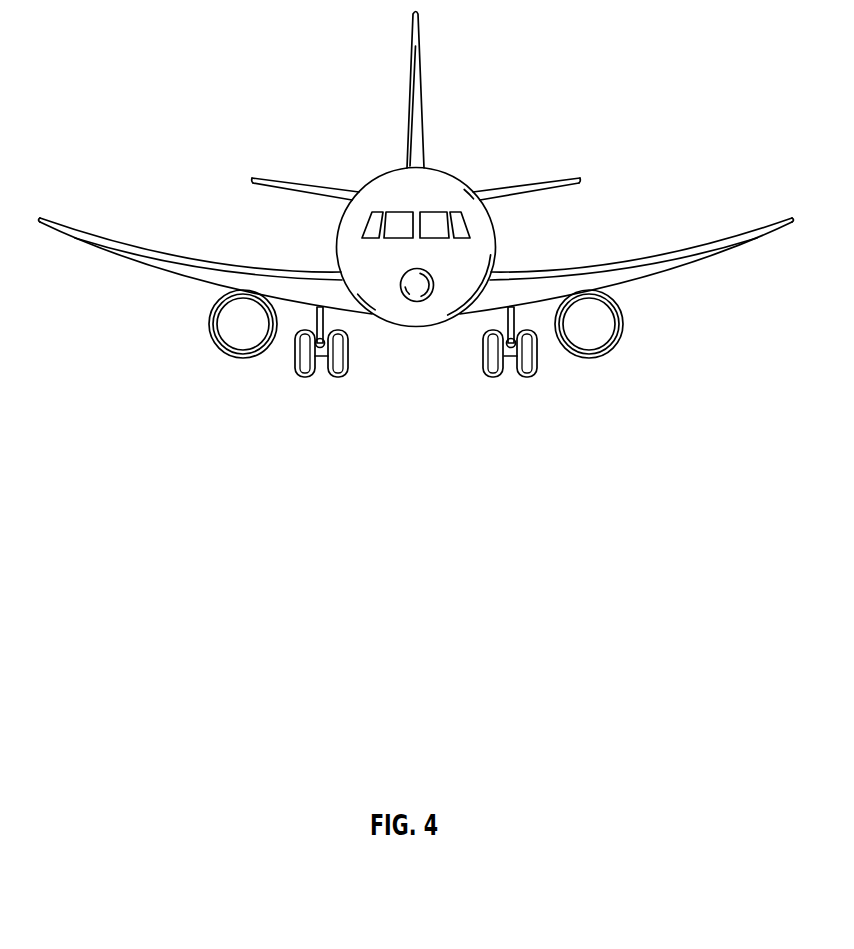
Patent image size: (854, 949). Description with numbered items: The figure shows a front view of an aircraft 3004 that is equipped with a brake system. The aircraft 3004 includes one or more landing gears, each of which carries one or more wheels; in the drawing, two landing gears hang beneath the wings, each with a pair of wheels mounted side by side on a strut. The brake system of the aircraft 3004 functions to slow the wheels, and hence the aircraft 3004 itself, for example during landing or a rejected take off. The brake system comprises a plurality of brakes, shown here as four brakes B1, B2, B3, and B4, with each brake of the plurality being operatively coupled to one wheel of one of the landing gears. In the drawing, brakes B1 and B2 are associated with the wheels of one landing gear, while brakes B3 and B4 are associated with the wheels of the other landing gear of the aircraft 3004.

The aircraft 3004 is at (495, 235).
The brake B1 is at (505, 358).
The brake B2 is at (516, 358).
The brake B3 is at (325, 358).
The brake B4 is at (315, 358).